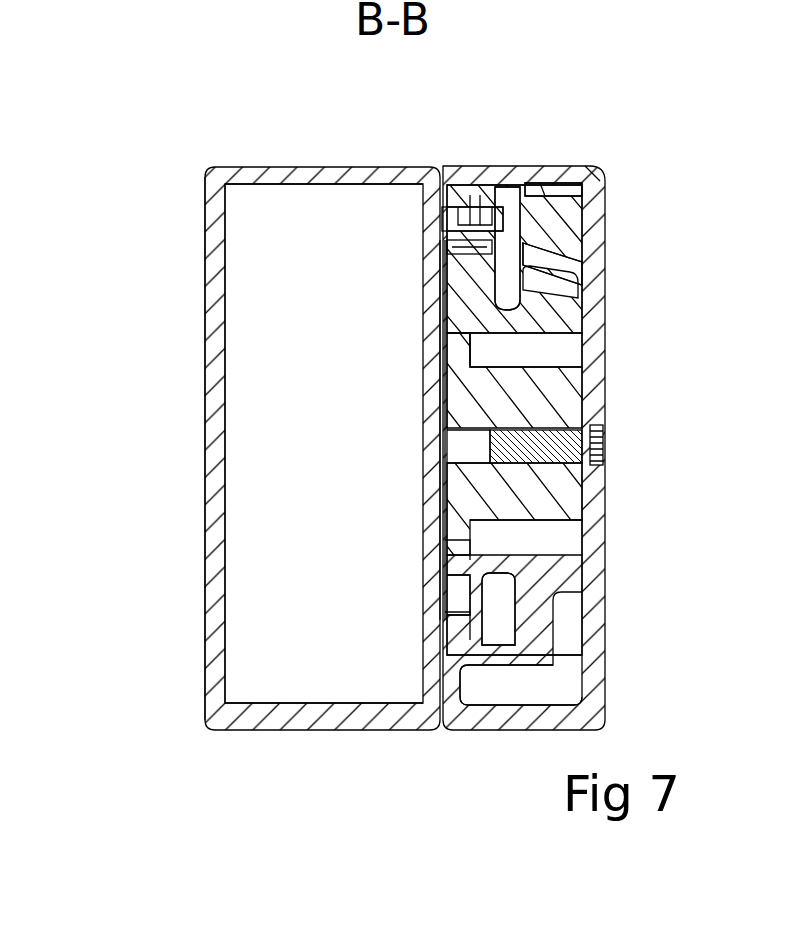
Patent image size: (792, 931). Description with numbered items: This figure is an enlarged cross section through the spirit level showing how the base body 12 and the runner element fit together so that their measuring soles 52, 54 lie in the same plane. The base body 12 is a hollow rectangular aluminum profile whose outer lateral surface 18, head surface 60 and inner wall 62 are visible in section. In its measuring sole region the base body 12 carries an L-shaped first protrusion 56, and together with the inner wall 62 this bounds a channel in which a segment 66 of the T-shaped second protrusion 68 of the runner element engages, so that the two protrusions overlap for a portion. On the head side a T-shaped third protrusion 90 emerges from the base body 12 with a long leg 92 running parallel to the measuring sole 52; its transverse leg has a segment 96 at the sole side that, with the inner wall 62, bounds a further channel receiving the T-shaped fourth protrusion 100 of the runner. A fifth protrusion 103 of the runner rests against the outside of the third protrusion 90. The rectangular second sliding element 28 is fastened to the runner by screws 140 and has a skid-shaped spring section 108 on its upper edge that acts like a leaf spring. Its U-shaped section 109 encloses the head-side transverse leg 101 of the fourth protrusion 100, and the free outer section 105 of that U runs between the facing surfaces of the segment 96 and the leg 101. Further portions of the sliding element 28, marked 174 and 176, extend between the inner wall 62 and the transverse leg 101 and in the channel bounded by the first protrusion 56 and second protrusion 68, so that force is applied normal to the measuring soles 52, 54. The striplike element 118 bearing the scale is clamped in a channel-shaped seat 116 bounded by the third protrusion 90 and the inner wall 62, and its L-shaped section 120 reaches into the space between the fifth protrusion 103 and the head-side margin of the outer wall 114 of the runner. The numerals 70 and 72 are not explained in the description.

The base body 12 is at (140, 161).
The outer lateral surface 18 is at (207, 497).
The second sliding element 28 is at (530, 490).
The measuring sole 52 is at (293, 730).
The measuring sole 54 is at (525, 730).
The first protrusion 56 is at (560, 690).
The head surface 60 is at (248, 167).
The inner wall 62 is at (440, 386).
The segment 66 is at (445, 545).
The second protrusion 68 is at (540, 570).
The guide 70 is at (445, 642).
The latching element 72 is at (445, 592).
The third protrusion 90 is at (505, 200).
The long leg 92 is at (485, 207).
The segment 96 is at (470, 305).
The fourth protrusion 100 is at (480, 335).
The transverse leg 101 is at (423, 265).
The fifth protrusion 103 is at (545, 258).
The free outer section 105 is at (560, 352).
The section 108 is at (460, 207).
The U-shaped section 109 is at (440, 268).
The outer wall 114 is at (605, 192).
The channel-shaped seat 116 is at (580, 166).
The striplike element 118 is at (545, 183).
The L-shaped section 120 is at (605, 228).
The screws 140 is at (605, 448).
The section 174 is at (445, 614).
The section 176 is at (445, 578).